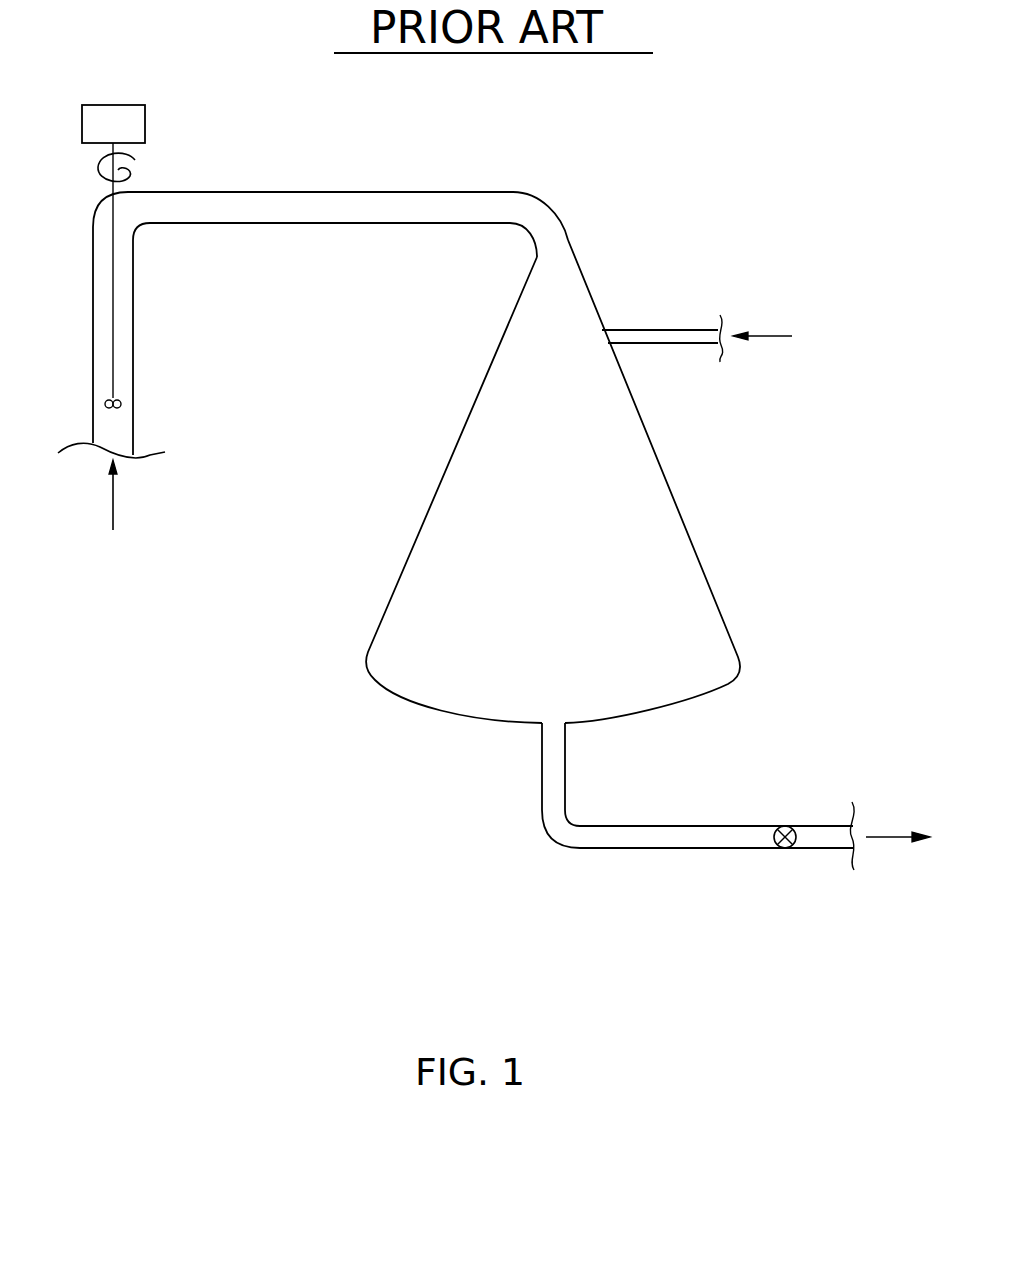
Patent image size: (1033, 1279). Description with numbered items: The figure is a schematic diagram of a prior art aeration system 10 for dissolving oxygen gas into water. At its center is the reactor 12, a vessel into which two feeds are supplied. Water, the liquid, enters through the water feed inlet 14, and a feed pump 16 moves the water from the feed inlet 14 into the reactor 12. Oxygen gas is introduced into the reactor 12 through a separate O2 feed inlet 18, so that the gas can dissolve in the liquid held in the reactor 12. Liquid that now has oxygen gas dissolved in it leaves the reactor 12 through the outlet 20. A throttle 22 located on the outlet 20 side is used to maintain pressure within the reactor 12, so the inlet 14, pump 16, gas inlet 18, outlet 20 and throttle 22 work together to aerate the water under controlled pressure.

The prior art system 10 is at (298, 717).
The reactor 12 is at (687, 530).
The water feed inlet 14 is at (387, 192).
The feed pump 16 is at (145, 130).
The O2 feed inlet 18 is at (658, 343).
The outlet 20 is at (633, 848).
The throttle 22 is at (793, 826).